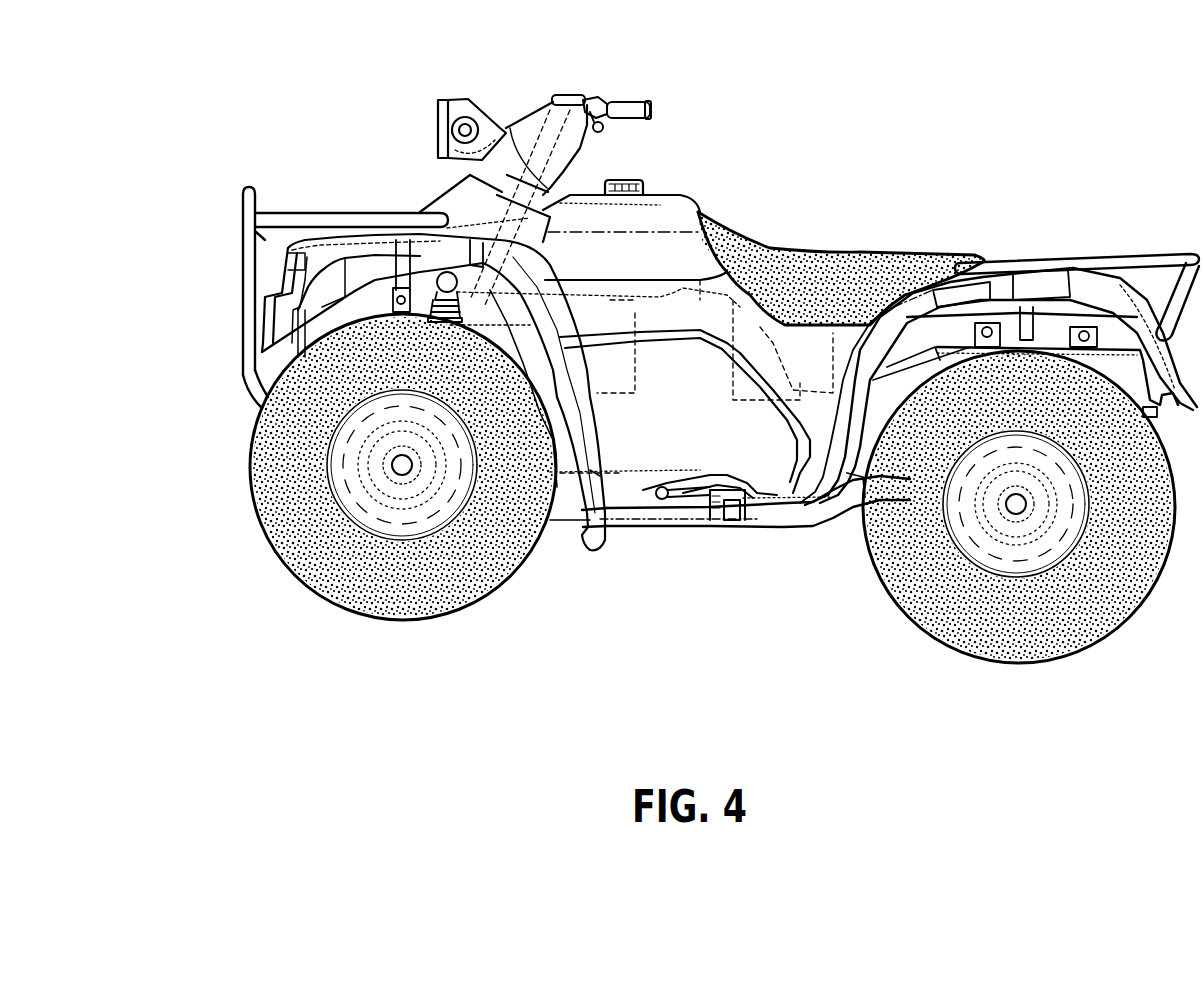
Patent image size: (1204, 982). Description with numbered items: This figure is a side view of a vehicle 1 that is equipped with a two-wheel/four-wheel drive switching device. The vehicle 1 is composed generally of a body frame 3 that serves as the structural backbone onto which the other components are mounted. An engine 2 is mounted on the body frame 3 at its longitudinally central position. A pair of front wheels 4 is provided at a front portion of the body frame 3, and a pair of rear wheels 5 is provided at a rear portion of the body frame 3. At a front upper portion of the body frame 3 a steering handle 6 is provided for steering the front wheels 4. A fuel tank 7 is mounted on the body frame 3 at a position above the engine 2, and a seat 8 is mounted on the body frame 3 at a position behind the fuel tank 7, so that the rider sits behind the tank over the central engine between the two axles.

The vehicle 1 is at (682, 192).
The engine 2 is at (770, 470).
The body frame 3 is at (665, 526).
The front wheels 4 is at (262, 523).
The rear wheels 5 is at (894, 600).
The steering handle 6 is at (600, 94).
The fuel tank 7 is at (657, 190).
The seat 8 is at (845, 265).